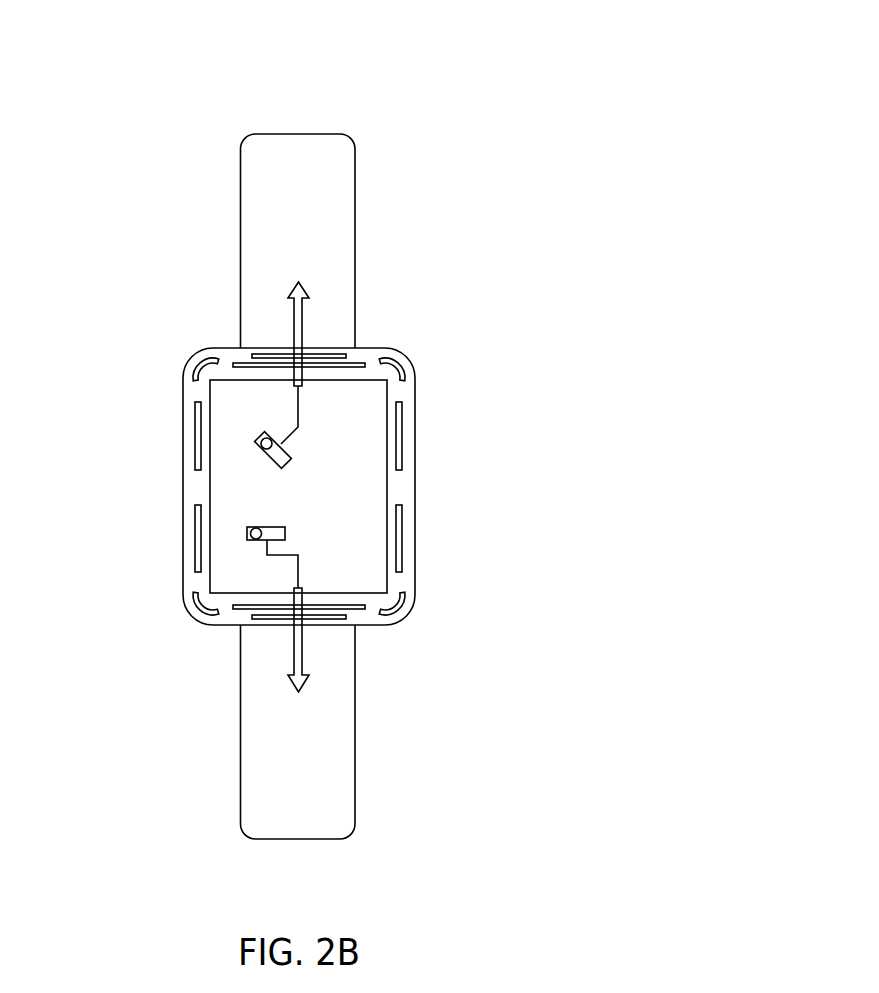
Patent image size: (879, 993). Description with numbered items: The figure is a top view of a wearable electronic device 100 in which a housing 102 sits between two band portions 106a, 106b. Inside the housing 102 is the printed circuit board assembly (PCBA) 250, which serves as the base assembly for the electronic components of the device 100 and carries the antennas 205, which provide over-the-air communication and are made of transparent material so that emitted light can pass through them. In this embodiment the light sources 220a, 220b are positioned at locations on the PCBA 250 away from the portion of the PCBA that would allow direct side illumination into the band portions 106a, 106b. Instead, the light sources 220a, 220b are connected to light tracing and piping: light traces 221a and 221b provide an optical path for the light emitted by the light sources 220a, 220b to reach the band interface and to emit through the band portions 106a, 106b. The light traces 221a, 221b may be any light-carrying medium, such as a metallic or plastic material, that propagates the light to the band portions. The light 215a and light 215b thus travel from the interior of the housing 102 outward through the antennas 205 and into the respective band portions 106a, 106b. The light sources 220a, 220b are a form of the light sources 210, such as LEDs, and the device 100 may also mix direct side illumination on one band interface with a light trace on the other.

The wearable electronic device 100 is at (413, 58).
The housing 102 is at (336, 495).
The band portion 106a is at (355, 228).
The band portion 106b is at (355, 723).
The antennas 205 is at (390, 605).
The light sources 210 is at (161, 475).
The light 215a is at (296, 316).
The light 215b is at (296, 644).
The light source 220a is at (261, 441).
The light source 220b is at (247, 532).
The light trace 221a is at (296, 402).
The light trace 221b is at (267, 552).
The printed circuit board assembly 250 is at (370, 438).